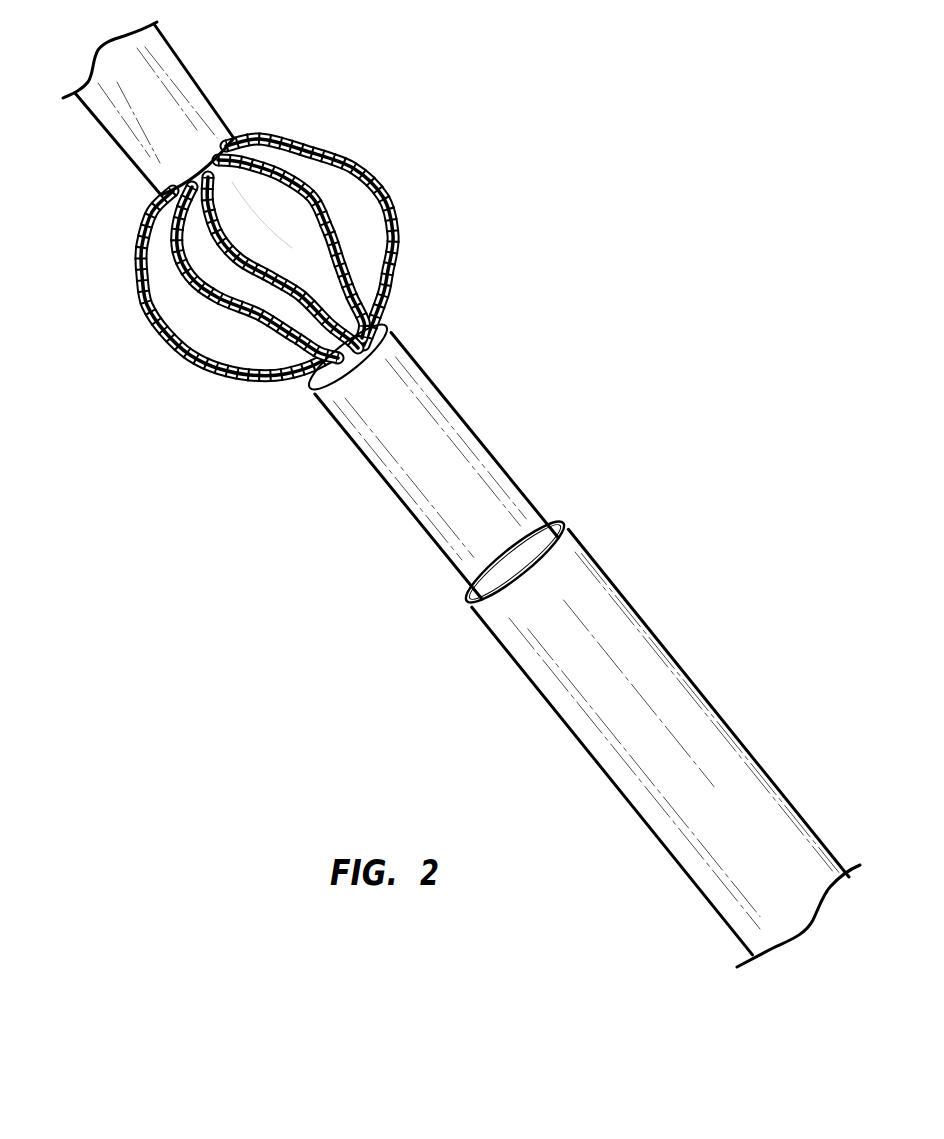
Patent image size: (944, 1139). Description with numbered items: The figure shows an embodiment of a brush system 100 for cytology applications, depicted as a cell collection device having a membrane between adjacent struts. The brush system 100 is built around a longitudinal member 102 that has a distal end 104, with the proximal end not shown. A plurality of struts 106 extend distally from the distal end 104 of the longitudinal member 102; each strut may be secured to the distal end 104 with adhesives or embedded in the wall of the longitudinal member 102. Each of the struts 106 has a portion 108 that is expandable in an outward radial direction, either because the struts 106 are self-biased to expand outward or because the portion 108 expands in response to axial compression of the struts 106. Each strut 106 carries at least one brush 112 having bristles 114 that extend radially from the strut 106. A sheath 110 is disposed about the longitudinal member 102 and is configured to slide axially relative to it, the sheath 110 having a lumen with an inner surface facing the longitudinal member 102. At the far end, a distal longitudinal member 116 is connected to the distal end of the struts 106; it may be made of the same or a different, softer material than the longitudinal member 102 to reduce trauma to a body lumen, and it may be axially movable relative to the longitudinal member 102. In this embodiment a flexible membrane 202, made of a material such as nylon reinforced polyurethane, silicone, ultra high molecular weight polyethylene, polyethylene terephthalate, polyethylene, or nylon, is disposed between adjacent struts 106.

The brush system 100 is at (461, 494).
The longitudinal member 102 is at (477, 472).
The distal end 104 is at (323, 328).
The struts 106 is at (392, 286).
The portion 108 is at (394, 242).
The sheath 110 is at (648, 646).
The brush 112 is at (205, 337).
The bristles 114 is at (160, 338).
The distal longitudinal member 116 is at (181, 88).
The flexible membrane 202 is at (262, 215).